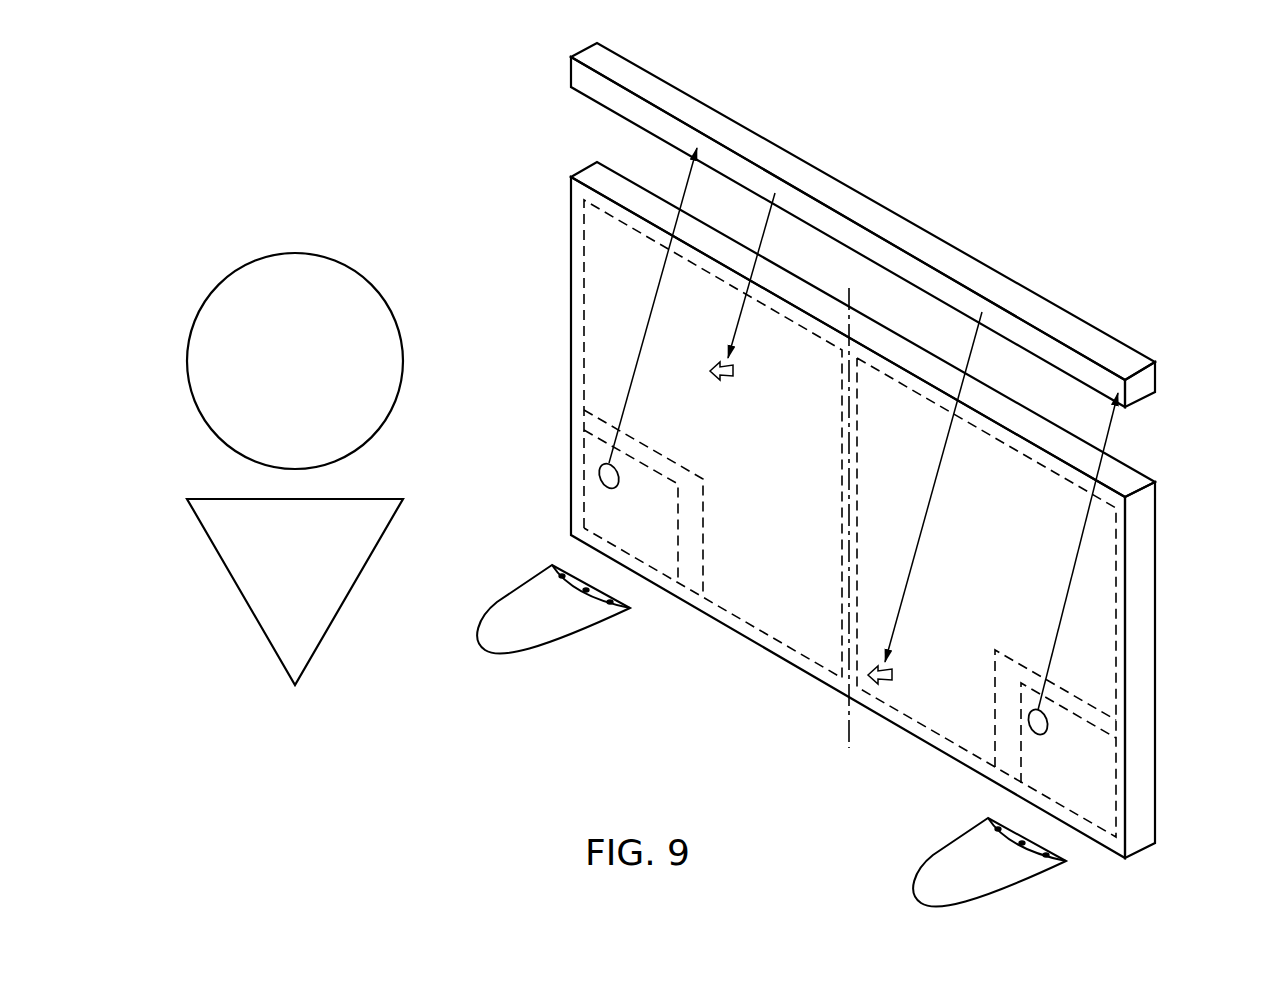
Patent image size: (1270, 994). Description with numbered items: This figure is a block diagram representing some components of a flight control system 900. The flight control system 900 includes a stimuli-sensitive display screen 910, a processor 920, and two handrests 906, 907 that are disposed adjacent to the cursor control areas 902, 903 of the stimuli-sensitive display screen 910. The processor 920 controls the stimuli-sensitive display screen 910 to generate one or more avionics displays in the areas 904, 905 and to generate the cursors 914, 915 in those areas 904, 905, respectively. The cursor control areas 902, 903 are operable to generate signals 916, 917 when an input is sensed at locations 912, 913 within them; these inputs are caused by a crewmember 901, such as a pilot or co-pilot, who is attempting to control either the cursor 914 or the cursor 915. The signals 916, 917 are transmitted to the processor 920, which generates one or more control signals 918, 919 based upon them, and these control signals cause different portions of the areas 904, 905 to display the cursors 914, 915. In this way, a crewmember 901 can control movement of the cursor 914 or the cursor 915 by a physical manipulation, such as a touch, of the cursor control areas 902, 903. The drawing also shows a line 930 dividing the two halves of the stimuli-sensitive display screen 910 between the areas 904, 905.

The flight control system 900 is at (1029, 171).
The crewmember 901 is at (331, 244).
The cursor control area 902 is at (592, 517).
The cursor control area 903 is at (1105, 795).
The area 904 is at (785, 459).
The area 905 is at (999, 549).
The handrest 906 is at (522, 603).
The handrest 907 is at (959, 855).
The stimuli-sensitive display screen 910 is at (1158, 604).
The location 912 is at (614, 489).
The location 913 is at (1041, 735).
The cursor 914 is at (733, 373).
The cursor 915 is at (892, 678).
The signal 916 is at (656, 311).
The signal 917 is at (1109, 428).
The control signal 918 is at (763, 229).
The fourth alignment line 919 is at (971, 346).
The processor 920 is at (1088, 321).
The center line 930 is at (851, 533).